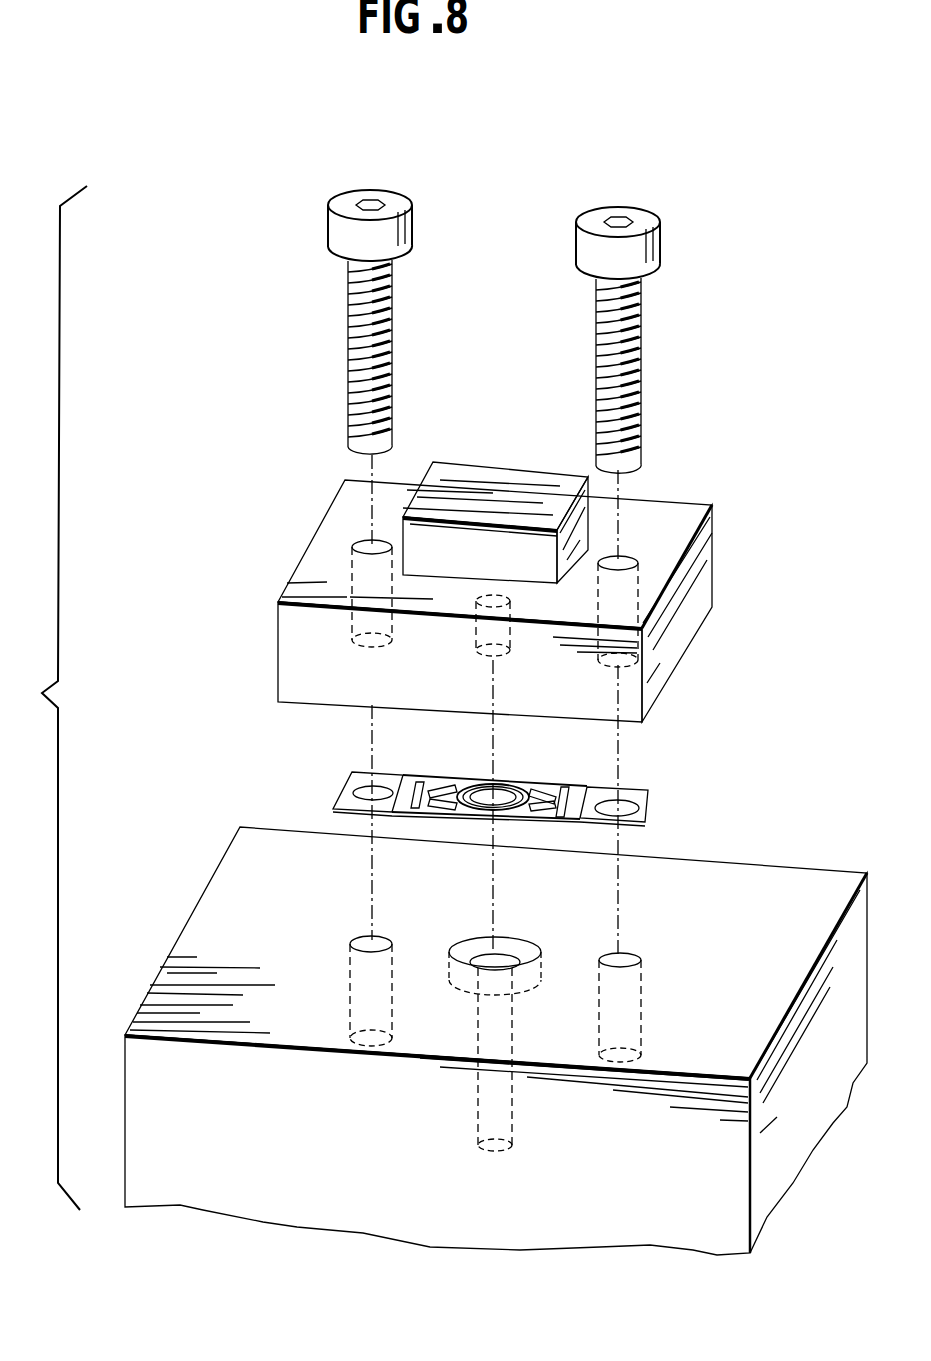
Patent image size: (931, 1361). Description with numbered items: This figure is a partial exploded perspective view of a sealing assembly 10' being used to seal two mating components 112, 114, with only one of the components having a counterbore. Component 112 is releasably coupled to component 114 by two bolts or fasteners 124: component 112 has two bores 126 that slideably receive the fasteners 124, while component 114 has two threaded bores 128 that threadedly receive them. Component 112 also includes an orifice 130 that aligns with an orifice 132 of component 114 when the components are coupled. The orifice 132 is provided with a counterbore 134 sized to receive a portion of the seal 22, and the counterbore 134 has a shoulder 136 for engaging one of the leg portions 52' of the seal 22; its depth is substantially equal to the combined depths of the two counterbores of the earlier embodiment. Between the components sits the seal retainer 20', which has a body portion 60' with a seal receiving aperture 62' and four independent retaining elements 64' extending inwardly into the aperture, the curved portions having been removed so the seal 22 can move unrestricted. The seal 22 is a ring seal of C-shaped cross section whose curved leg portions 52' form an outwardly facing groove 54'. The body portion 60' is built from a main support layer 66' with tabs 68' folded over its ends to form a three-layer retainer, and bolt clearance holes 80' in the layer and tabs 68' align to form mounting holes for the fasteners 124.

The fasteners 124 is at (573, 248).
The bores 126 is at (357, 543).
The orifice 130 is at (488, 599).
The component 112 is at (300, 644).
The component 114 is at (215, 915).
The threaded bores 128 is at (355, 940).
The counterbore 134 is at (525, 950).
The shoulder 136 is at (482, 960).
The orifice 132 is at (508, 985).
The sealing assembly 10' is at (411, 770).
The seal retainer 20' is at (589, 797).
The tabs 68' is at (532, 792).
The bolt clearance holes 80' is at (491, 792).
The leg portions 52' is at (503, 745).
The groove 54' is at (477, 840).
The seal 22 is at (530, 776).
The main support layer 66' is at (406, 766).
The seal receiving aperture 62' is at (455, 761).
The retaining elements 64' is at (470, 845).
The body portion 60' is at (599, 776).